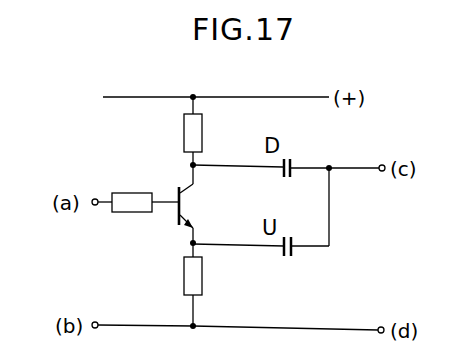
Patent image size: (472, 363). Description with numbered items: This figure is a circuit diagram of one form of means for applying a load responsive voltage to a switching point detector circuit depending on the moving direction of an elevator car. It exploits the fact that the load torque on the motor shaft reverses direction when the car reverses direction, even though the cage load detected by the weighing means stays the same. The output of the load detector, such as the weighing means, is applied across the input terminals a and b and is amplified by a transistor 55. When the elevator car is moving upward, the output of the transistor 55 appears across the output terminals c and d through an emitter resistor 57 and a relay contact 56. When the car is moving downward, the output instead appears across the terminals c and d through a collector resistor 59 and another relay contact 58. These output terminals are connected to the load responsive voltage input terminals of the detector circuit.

The transistor 55 is at (175, 212).
The relay contact 56 is at (287, 226).
The emitter resistor 57 is at (183, 278).
The relay contact 58 is at (284, 159).
The collector resistor 59 is at (203, 124).